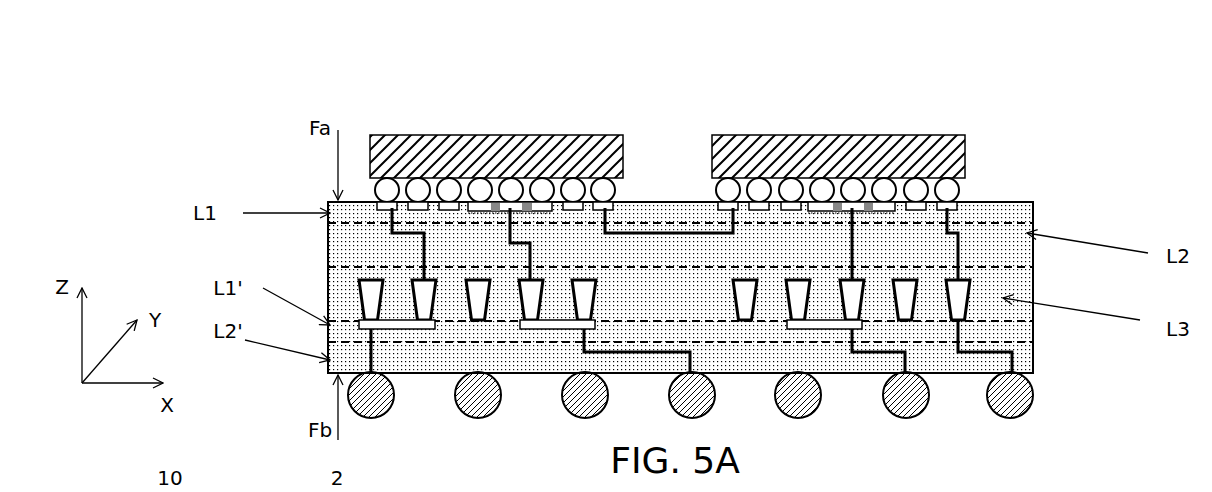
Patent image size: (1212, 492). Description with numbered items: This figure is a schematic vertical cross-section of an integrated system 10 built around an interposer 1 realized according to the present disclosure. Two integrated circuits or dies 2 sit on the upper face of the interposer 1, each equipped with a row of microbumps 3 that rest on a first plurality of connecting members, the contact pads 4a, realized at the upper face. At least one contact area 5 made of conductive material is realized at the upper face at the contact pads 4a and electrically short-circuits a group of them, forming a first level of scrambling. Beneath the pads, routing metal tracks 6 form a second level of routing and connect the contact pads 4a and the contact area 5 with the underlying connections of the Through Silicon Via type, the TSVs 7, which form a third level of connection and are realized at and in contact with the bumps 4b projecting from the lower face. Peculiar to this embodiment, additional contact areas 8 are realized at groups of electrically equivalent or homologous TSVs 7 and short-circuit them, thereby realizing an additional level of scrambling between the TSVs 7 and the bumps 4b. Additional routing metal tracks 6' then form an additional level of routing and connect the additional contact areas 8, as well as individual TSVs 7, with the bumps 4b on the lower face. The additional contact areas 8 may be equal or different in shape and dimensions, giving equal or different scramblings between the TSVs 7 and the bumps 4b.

The interposer 1 is at (992, 210).
The integrated circuit or die 2 is at (474, 145).
The microbumps 3 is at (379, 186).
The contact pads 4a is at (447, 203).
The bumps 4b is at (378, 390).
The contact area 5 is at (531, 200).
The routing metal tracks 6 is at (675, 176).
The additional routing metal tracks 6' is at (691, 396).
The TSVs 7 is at (960, 300).
The additional contact areas 8 is at (540, 323).
The integrated system 10 is at (968, 117).